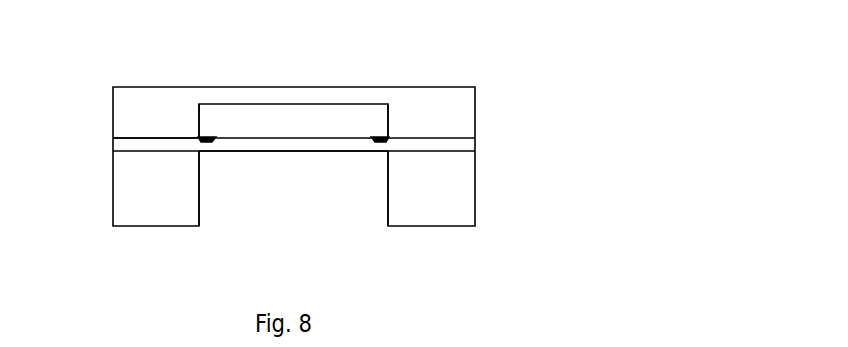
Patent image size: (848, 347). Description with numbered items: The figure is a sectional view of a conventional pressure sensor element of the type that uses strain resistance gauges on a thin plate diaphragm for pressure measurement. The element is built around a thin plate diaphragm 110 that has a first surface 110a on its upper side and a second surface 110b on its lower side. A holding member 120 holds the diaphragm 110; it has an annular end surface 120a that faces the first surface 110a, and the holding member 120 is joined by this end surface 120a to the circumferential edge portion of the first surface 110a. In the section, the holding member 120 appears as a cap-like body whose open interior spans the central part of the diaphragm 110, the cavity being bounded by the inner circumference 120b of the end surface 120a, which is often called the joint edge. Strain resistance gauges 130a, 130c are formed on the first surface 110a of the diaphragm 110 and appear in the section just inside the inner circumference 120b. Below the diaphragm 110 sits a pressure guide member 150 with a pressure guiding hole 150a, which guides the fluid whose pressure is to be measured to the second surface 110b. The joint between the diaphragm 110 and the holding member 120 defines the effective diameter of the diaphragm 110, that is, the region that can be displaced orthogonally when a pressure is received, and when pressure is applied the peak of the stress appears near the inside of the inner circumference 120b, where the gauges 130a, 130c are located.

The diaphragm 110 is at (475, 141).
The first surface 110a is at (262, 139).
The second surface 110b is at (298, 146).
The holding member 120 is at (475, 97).
The end surface 120a is at (142, 139).
The inner circumference 120b is at (206, 138).
The strain resistance gauge 130a is at (380, 139).
The strain resistance gauge 130c is at (208, 139).
The pressure guide member 150 is at (475, 189).
The pressure guiding hole 150a is at (349, 212).